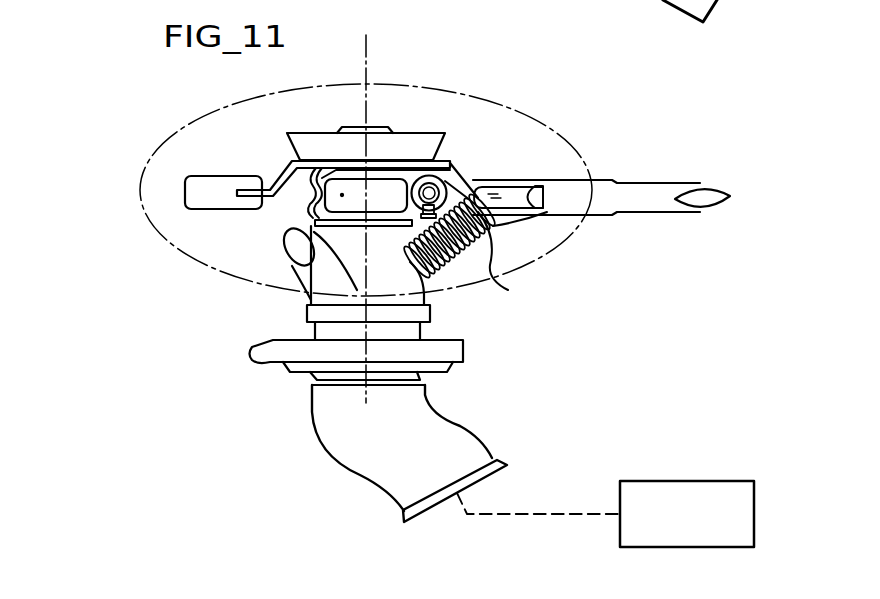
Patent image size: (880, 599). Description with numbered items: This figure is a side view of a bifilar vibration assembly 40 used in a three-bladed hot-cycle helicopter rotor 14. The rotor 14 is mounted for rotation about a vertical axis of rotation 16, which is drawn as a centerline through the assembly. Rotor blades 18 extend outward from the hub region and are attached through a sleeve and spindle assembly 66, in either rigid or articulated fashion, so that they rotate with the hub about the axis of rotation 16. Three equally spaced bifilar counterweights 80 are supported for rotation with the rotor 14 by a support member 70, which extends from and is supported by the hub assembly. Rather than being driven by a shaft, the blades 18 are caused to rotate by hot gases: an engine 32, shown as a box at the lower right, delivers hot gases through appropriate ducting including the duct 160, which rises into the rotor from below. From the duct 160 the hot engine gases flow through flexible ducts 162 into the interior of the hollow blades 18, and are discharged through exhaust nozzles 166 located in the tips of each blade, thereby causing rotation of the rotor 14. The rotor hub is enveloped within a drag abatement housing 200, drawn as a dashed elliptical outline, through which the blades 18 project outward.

The helicopter rotor 14 is at (580, 109).
The axis of rotation 16 is at (368, 58).
The rotor blades 18 is at (652, 183).
The engine 32 is at (698, 531).
The bifilar vibration assembly 40 is at (270, 156).
The sleeve and spindle assembly 66 is at (312, 212).
The support member 70 is at (450, 165).
The bifilar counterweights 80 is at (185, 188).
The duct 160 is at (462, 437).
The flexible ducts 162 is at (472, 265).
The exhaust nozzles 166 is at (703, 193).
The drag abatement housing 200 is at (470, 86).